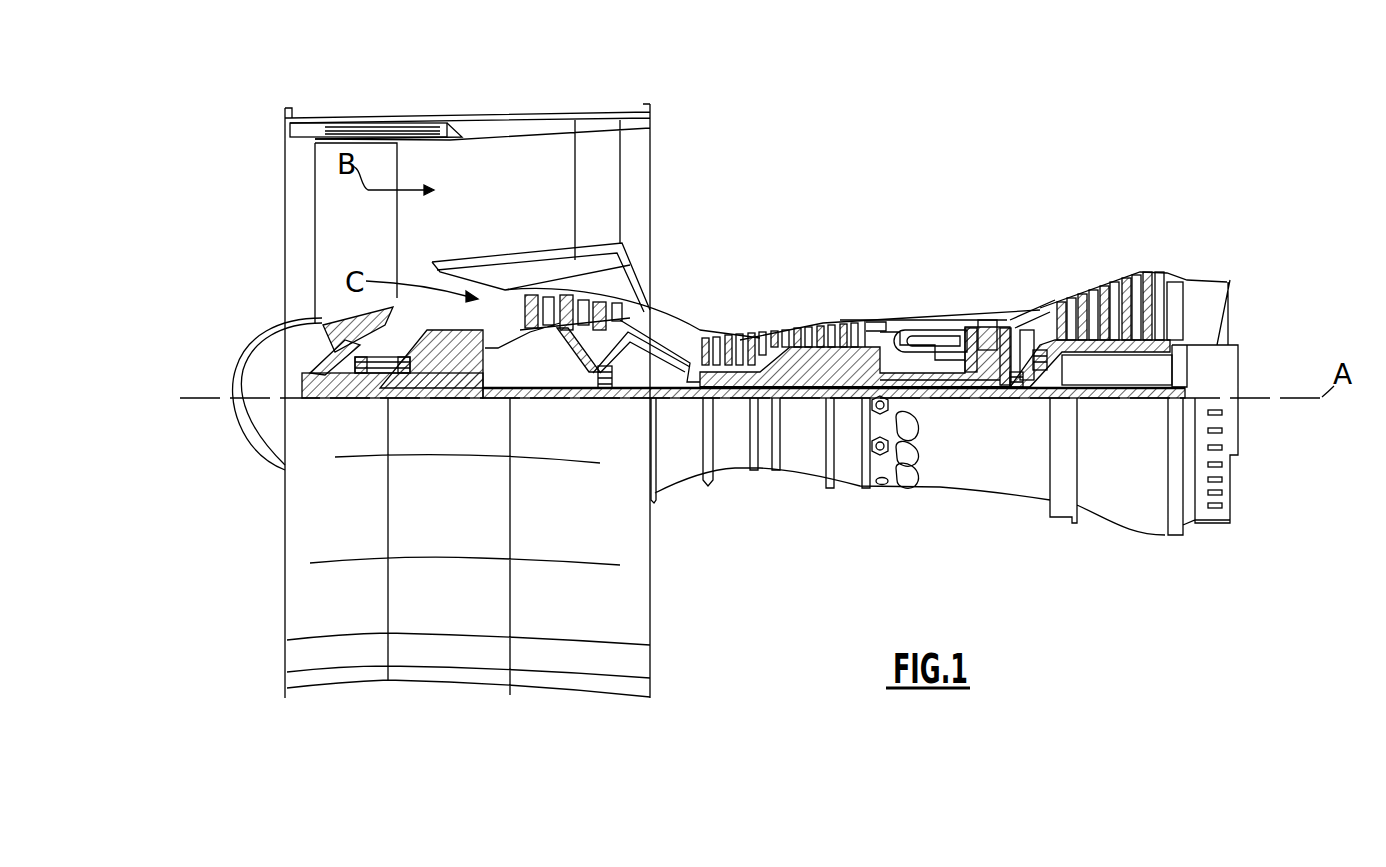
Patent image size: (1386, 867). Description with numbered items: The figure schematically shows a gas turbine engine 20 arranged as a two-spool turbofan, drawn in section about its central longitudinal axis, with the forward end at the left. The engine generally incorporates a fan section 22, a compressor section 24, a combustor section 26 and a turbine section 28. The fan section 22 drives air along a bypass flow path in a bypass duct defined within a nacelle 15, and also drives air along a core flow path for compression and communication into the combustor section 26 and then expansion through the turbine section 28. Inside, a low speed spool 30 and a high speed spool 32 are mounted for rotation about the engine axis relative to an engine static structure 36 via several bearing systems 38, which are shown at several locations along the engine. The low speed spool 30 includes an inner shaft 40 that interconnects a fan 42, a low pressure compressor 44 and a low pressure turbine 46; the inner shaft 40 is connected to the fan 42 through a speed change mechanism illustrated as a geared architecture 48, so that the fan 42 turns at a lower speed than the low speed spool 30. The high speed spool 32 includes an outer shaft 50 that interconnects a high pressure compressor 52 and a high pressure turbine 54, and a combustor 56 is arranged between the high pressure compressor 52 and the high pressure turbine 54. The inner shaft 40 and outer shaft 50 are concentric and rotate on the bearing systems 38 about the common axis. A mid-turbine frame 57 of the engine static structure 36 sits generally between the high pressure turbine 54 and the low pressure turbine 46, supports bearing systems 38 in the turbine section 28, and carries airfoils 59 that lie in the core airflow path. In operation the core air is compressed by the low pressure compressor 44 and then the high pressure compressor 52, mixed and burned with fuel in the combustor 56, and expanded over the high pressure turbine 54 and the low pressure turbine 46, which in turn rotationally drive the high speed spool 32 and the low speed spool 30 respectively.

The nacelle 15 is at (462, 118).
The gas turbine engine 20 is at (936, 160).
The fan section 22 is at (393, 99).
The compressor section 24 is at (701, 305).
The combustor section 26 is at (922, 292).
The turbine section 28 is at (1077, 252).
The low speed spool 30 is at (805, 410).
The high speed spool 32 is at (849, 347).
The engine static structure 36 is at (848, 494).
The bearing systems 38 is at (606, 392).
The inner shaft 40 is at (667, 403).
The fan 42 is at (370, 244).
The low pressure compressor 44 is at (578, 308).
The low pressure turbine 46 is at (1117, 292).
The geared architecture 48 is at (474, 390).
The outer shaft 50 is at (933, 384).
The high pressure compressor 52 is at (782, 362).
The high pressure turbine 54 is at (978, 340).
The combustor 56 is at (922, 339).
The mid-turbine frame 57 is at (1031, 308).
The airfoils 59 is at (1055, 363).